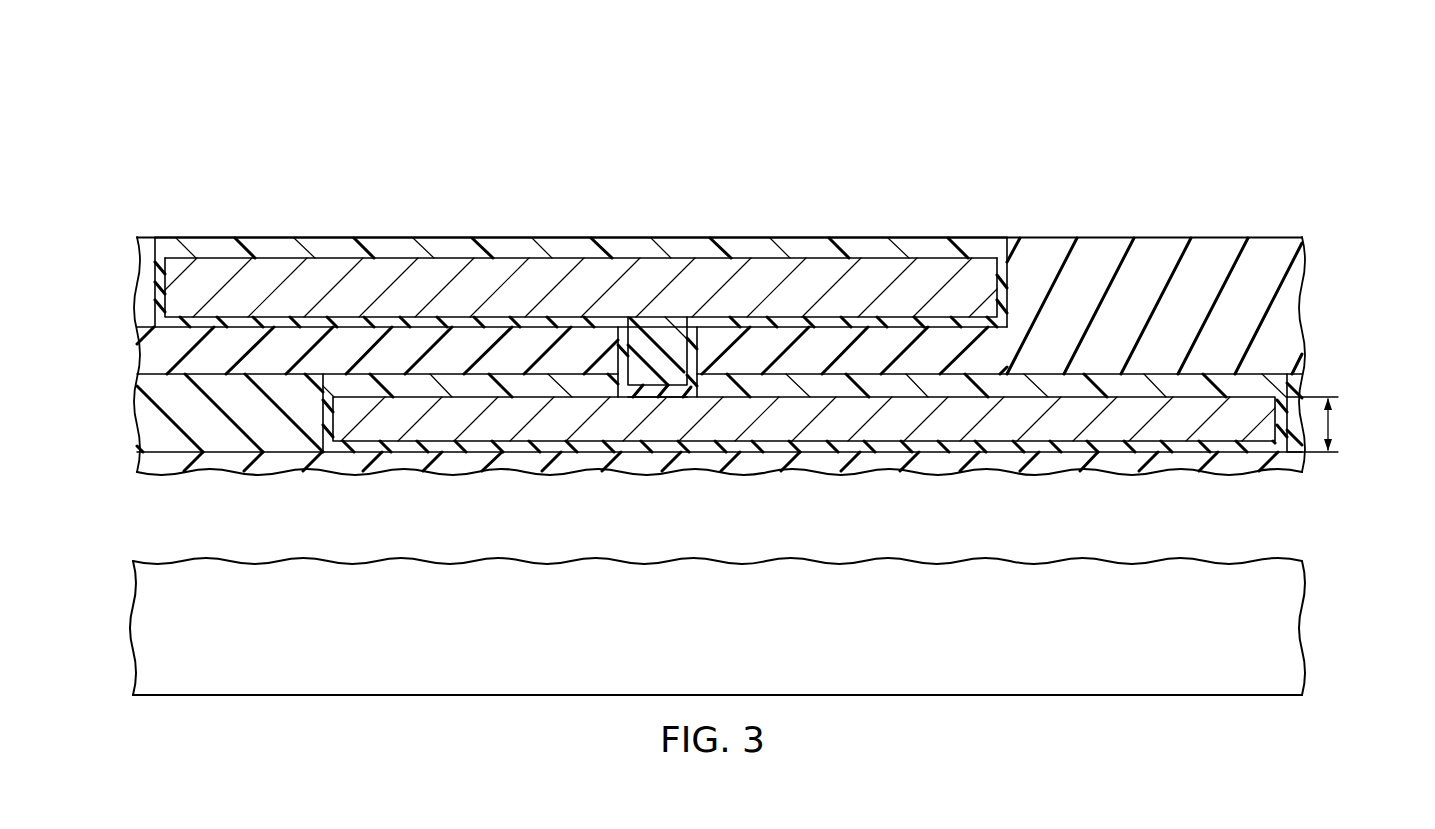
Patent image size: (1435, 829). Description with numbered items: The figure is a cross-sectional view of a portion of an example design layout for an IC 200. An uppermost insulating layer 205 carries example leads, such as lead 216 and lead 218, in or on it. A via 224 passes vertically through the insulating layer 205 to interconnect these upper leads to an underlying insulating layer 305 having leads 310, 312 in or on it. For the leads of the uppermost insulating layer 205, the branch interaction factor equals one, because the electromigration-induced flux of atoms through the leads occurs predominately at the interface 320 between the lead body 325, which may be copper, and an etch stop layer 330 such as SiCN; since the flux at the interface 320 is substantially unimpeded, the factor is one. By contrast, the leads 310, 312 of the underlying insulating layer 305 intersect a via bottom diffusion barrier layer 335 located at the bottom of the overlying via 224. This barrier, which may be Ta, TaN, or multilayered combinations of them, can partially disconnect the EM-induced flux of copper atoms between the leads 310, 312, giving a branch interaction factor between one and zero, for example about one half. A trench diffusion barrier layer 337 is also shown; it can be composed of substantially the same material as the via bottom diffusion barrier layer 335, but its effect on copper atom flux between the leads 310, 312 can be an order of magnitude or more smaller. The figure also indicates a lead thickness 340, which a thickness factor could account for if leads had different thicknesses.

The IC 200 is at (372, 113).
The insulating layer 205 is at (136, 327).
The lead 216 is at (503, 222).
The lead 218 is at (812, 223).
The via 224 is at (634, 368).
The underlying insulating layer 305 is at (136, 420).
The lead 310 is at (445, 491).
The lead 312 is at (973, 491).
The interface 320 is at (392, 237).
The lead body 325 is at (662, 270).
The etch stop layer 330 is at (267, 238).
The via bottom diffusion barrier layer 335 is at (678, 393).
The trench diffusion barrier layer 337 is at (1000, 268).
The thickness 340 is at (1325, 428).